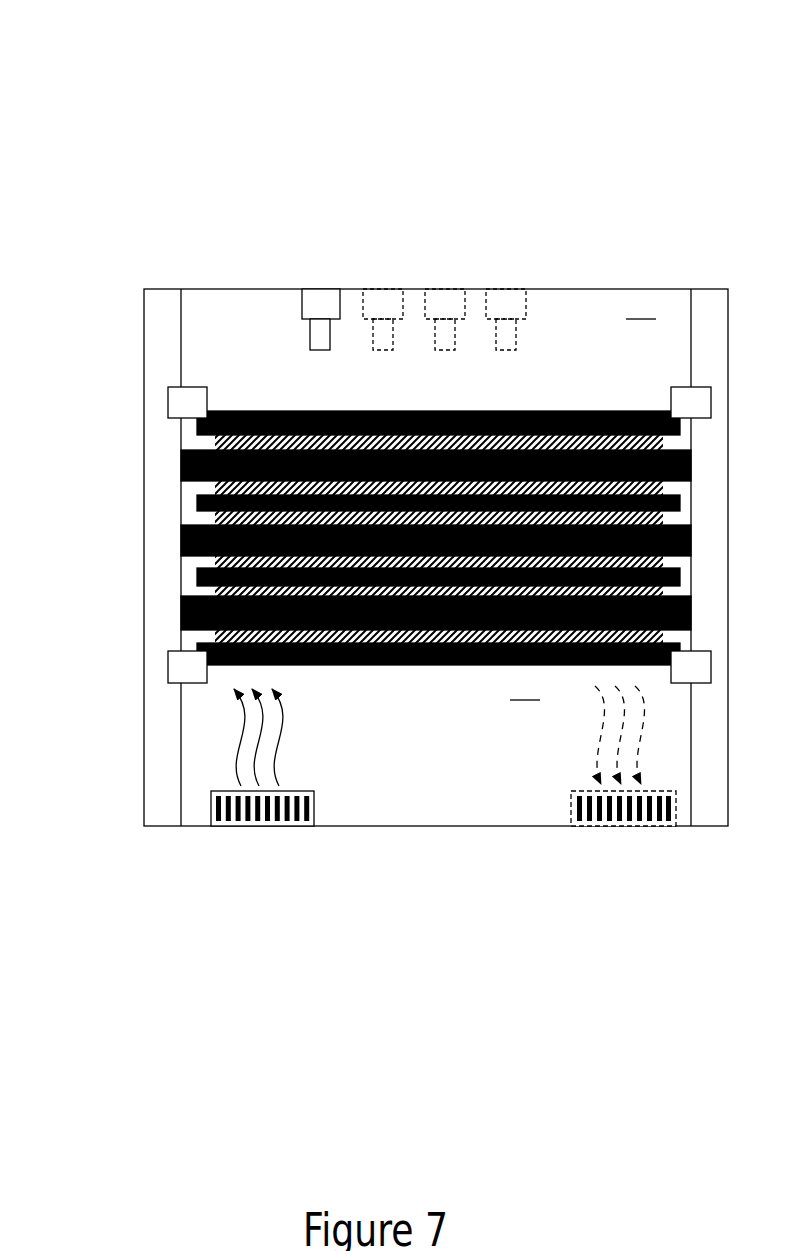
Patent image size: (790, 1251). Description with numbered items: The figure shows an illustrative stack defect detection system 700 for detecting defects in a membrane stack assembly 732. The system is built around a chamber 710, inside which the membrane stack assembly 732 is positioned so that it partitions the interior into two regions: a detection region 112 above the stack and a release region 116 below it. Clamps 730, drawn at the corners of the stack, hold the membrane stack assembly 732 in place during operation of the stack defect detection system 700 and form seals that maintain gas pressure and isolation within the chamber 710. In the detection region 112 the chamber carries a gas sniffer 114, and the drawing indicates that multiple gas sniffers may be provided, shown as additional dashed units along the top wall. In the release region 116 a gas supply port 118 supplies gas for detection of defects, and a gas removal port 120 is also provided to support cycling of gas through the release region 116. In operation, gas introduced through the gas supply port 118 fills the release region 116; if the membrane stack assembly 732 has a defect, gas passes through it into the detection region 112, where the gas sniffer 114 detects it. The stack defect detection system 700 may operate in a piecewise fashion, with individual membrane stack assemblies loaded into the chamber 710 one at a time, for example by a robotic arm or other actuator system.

The stack defect detection system 700 is at (379, 423).
The chamber 710 is at (140, 257).
The detection region 112 is at (641, 309).
The gas sniffer 114 is at (287, 290).
The release region 116 is at (525, 689).
The gas supply port 118 is at (304, 777).
The gas removal port 120 is at (561, 770).
The clamps 730 is at (208, 377).
The membrane stack assembly 732 is at (317, 398).